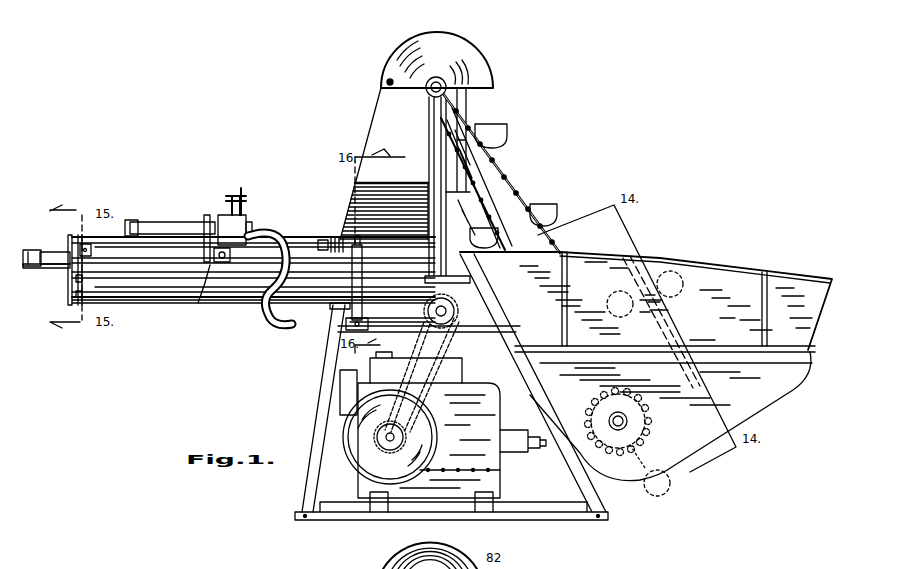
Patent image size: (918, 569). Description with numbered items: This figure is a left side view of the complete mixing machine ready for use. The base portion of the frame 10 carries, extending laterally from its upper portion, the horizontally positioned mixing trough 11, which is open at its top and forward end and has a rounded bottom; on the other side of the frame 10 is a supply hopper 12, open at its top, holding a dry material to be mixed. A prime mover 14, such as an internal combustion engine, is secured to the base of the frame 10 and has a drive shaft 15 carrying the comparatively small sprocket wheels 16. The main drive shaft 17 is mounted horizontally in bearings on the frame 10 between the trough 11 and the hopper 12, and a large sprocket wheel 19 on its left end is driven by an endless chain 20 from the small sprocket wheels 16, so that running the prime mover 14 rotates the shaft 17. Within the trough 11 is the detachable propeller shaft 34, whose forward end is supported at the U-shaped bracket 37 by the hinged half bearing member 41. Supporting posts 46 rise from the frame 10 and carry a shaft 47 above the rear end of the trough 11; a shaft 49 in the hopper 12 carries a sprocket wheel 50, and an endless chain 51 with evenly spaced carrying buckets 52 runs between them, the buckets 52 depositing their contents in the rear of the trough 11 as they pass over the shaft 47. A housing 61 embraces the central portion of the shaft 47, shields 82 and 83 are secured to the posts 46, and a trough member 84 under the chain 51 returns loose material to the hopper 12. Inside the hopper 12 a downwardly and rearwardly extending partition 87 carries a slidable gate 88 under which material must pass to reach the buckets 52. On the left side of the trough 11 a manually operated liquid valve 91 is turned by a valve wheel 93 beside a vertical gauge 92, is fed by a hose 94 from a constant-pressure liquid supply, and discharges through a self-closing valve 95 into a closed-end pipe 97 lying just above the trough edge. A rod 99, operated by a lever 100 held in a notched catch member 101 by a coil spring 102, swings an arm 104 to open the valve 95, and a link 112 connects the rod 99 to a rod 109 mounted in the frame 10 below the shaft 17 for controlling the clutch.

The frame base portion 10 is at (330, 386).
The mixing trough 11 is at (150, 306).
The supply hopper 12 is at (780, 388).
The prime mover 14 is at (496, 458).
The drive shaft 15 is at (388, 447).
The small sprocket wheels 16 is at (395, 426).
The main drive shaft 17 is at (452, 312).
The large sprocket wheel 19 is at (420, 342).
The endless chain 20 is at (440, 346).
The propeller shaft 34 is at (38, 270).
The U-shaped bracket 37 is at (56, 255).
The half bearing member 41 is at (36, 250).
The supporting posts 46 is at (430, 132).
The shaft 47 is at (445, 76).
The shaft 49 is at (645, 420).
The sprocket wheel 50 is at (657, 483).
The endless chain 51 is at (520, 196).
The carrying buckets 52 is at (497, 125).
The housing 61 is at (474, 196).
The shield 82 is at (472, 72).
The shield 83 is at (378, 124).
The trough member 84 is at (475, 215).
The partition 87 is at (642, 304).
The gate 88 is at (661, 322).
The liquid valve 91 is at (222, 216).
The vertical gauge 92 is at (250, 222).
The valve wheel 93 is at (231, 197).
The hose 94 is at (266, 318).
The self-closing valve 95 is at (205, 220).
The pipe 97 is at (172, 222).
The rod 99 is at (170, 248).
The lever 100 is at (76, 294).
The catch member 101 is at (76, 278).
The coil spring 102 is at (324, 240).
The arm 104 is at (198, 304).
The rod 109 is at (395, 312).
The link 112 is at (362, 262).